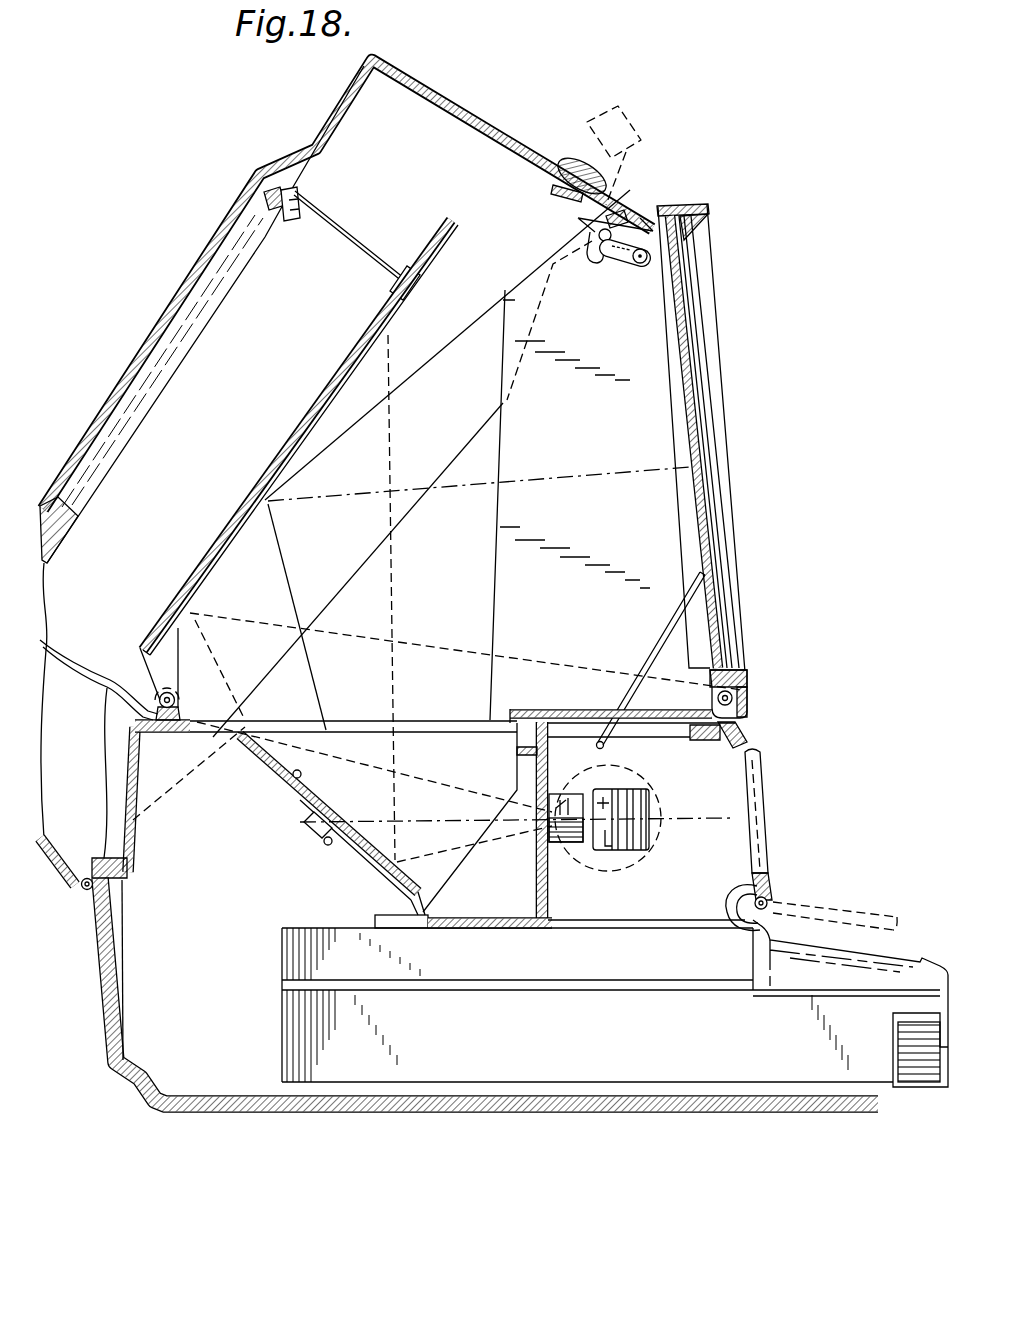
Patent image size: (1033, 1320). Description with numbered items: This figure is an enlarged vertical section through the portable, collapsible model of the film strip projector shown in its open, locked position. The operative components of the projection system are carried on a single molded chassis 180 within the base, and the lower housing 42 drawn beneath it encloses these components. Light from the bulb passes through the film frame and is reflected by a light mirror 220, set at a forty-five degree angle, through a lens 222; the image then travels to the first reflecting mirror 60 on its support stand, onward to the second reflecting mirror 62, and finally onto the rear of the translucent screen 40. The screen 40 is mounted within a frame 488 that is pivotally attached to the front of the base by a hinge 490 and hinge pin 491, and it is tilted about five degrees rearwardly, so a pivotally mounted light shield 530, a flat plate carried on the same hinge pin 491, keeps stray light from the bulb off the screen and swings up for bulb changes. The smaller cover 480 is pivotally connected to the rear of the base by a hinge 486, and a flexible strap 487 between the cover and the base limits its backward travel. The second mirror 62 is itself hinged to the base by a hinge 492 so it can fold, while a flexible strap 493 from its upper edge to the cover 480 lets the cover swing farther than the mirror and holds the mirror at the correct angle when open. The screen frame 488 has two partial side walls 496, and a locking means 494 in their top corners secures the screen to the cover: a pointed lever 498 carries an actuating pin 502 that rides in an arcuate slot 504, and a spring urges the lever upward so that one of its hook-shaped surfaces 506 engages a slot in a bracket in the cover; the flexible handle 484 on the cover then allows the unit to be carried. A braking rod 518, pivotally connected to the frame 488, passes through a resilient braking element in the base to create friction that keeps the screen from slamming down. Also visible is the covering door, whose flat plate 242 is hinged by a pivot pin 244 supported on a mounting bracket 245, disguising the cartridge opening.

The cover 480 is at (428, 92).
The flexible handle 484 is at (572, 160).
The locking means 494 is at (660, 192).
The frame 488 is at (700, 206).
The hook-shaped surfaces 506 is at (600, 210).
The actuating pin 502 is at (592, 232).
The flexible strap 493 is at (342, 236).
The lever 498 is at (608, 258).
The arcuate slot 504 is at (595, 264).
The second reflecting mirror 62 is at (296, 437).
The partial side walls 496 is at (510, 433).
The screen 40 is at (708, 598).
The braking rod 518 is at (667, 632).
The light shield 530 is at (600, 710).
The hinge pin 491 is at (747, 688).
The hinge 490 is at (747, 702).
The plate 242 is at (760, 806).
The lens 222 is at (568, 795).
The light mirror 220 is at (617, 792).
The hinge 492 is at (160, 694).
The flexible strap 487 is at (108, 748).
The first reflecting mirror 60 is at (292, 778).
The hinge 486 is at (88, 890).
The chassis 180 is at (546, 888).
The mounting bracket 245 is at (742, 893).
The pivot pin 244 is at (767, 900).
The base housing 42 is at (518, 1055).